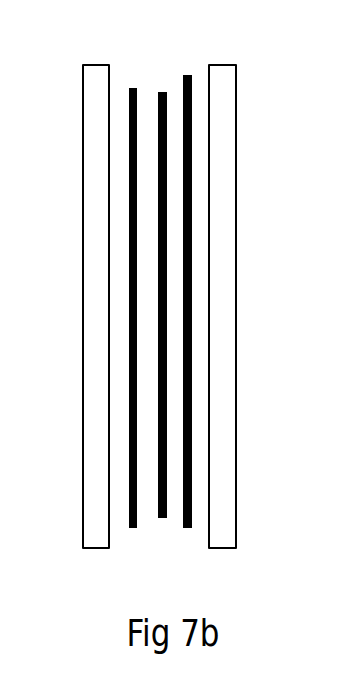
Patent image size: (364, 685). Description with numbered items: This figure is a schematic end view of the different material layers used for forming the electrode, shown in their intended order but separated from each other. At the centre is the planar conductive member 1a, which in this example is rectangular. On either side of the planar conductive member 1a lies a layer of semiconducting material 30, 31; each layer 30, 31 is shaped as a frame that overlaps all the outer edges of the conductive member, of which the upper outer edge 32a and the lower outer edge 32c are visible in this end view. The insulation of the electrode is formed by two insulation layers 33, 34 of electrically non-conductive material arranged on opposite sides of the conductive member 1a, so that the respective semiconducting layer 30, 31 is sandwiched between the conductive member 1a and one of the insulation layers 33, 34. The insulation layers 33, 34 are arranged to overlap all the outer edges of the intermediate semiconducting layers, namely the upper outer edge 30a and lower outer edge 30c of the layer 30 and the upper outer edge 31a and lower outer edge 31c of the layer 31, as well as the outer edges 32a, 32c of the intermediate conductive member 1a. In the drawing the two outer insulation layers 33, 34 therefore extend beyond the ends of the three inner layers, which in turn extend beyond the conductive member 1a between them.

The planar conductive member 1a is at (167, 158).
The layer of semiconducting material 30 is at (132, 301).
The outer edge of layer of semiconducting material 30a is at (134, 92).
The outer edge of layer of semiconducting material 30c is at (133, 524).
The layer of semiconducting material 31 is at (193, 369).
The outer edge of layer of semiconducting material 31a is at (188, 82).
The outer edge of layer of semiconducting material 31c is at (188, 524).
The outer edge of planar conductive member 32a is at (163, 95).
The outer edge of planar conductive member 32c is at (163, 516).
The insulation layer 33 is at (97, 233).
The insulation layer 34 is at (230, 246).